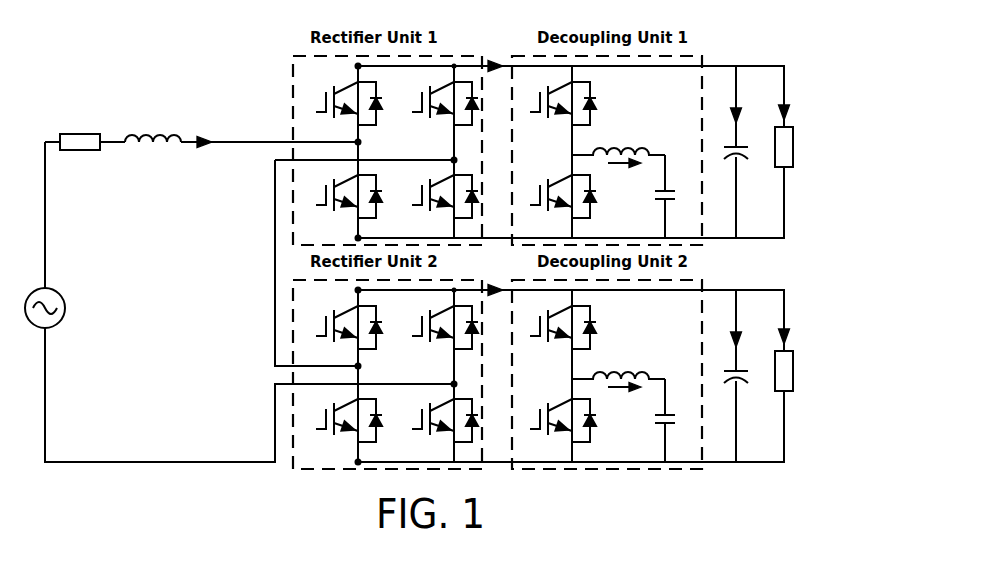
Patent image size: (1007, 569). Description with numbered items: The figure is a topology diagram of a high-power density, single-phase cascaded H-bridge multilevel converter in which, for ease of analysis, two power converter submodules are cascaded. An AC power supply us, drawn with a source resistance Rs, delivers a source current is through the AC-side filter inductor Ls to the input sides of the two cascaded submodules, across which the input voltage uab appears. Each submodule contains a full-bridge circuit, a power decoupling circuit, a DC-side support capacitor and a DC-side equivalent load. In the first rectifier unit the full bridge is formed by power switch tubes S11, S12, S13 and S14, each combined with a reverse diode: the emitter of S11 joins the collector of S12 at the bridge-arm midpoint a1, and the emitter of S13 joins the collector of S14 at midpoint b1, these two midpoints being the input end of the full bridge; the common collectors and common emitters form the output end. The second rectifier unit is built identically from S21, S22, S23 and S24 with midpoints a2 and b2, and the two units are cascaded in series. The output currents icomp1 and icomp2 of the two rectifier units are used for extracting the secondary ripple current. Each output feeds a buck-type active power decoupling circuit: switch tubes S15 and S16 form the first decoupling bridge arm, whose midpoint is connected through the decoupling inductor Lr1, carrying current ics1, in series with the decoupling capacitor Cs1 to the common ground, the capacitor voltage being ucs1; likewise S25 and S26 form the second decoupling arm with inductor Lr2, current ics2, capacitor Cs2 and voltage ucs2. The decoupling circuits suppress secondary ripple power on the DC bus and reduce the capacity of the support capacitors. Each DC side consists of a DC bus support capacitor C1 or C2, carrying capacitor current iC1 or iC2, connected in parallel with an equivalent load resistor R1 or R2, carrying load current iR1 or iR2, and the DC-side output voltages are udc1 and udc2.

The source resistance Rs is at (80, 132).
The AC-side filter inductor Ls is at (153, 128).
The source current is is at (200, 155).
The AC power supply us is at (56, 308).
The rectifier input voltage uab is at (241, 296).
The bridge arm A1 midpoint a1 is at (370, 144).
The bridge arm B1 midpoint b1 is at (441, 153).
The bridge arm A2 midpoint a2 is at (370, 368).
The bridge arm B2 midpoint b2 is at (441, 377).
The power switch tube S11 is at (339, 103).
The power switch tube S12 is at (339, 196).
The power switch tube S13 is at (435, 103).
The power switch tube S14 is at (435, 196).
The power switch tube S15 is at (555, 103).
The power switch tube S16 is at (555, 196).
The power switch tube S21 is at (339, 327).
The power switch tube S22 is at (339, 420).
The power switch tube S23 is at (435, 327).
The power switch tube S24 is at (435, 420).
The power switch tube S25 is at (555, 327).
The power switch tube S26 is at (555, 420).
The output current of rectifier unit 1 icomp1 is at (495, 54).
The output current of rectifier unit 2 icomp2 is at (495, 278).
The decoupling inductor Lr1 is at (618, 141).
The decoupling inductor Lr2 is at (618, 365).
The decoupling capacitor current 1 ics1 is at (624, 173).
The decoupling capacitor current 2 ics2 is at (624, 397).
The decoupling capacitor Cs1 is at (676, 196).
The decoupling capacitor Cs2 is at (676, 420).
The decoupling capacitor voltage ucs1 is at (643, 198).
The decoupling capacitor voltage ucs2 is at (643, 422).
The DC bus support capacitor C1 is at (726, 152).
The DC bus support capacitor C2 is at (726, 376).
The DC-link capacitor current 1 iC1 is at (725, 104).
The DC-link capacitor current 2 iC2 is at (725, 328).
The equivalent load resistor R1 is at (797, 152).
The equivalent load resistor R2 is at (797, 376).
The load current 1 iR1 is at (773, 109).
The load current 2 iR2 is at (773, 333).
The DC-side output voltage udc1 is at (749, 141).
The DC-side output voltage udc2 is at (749, 365).